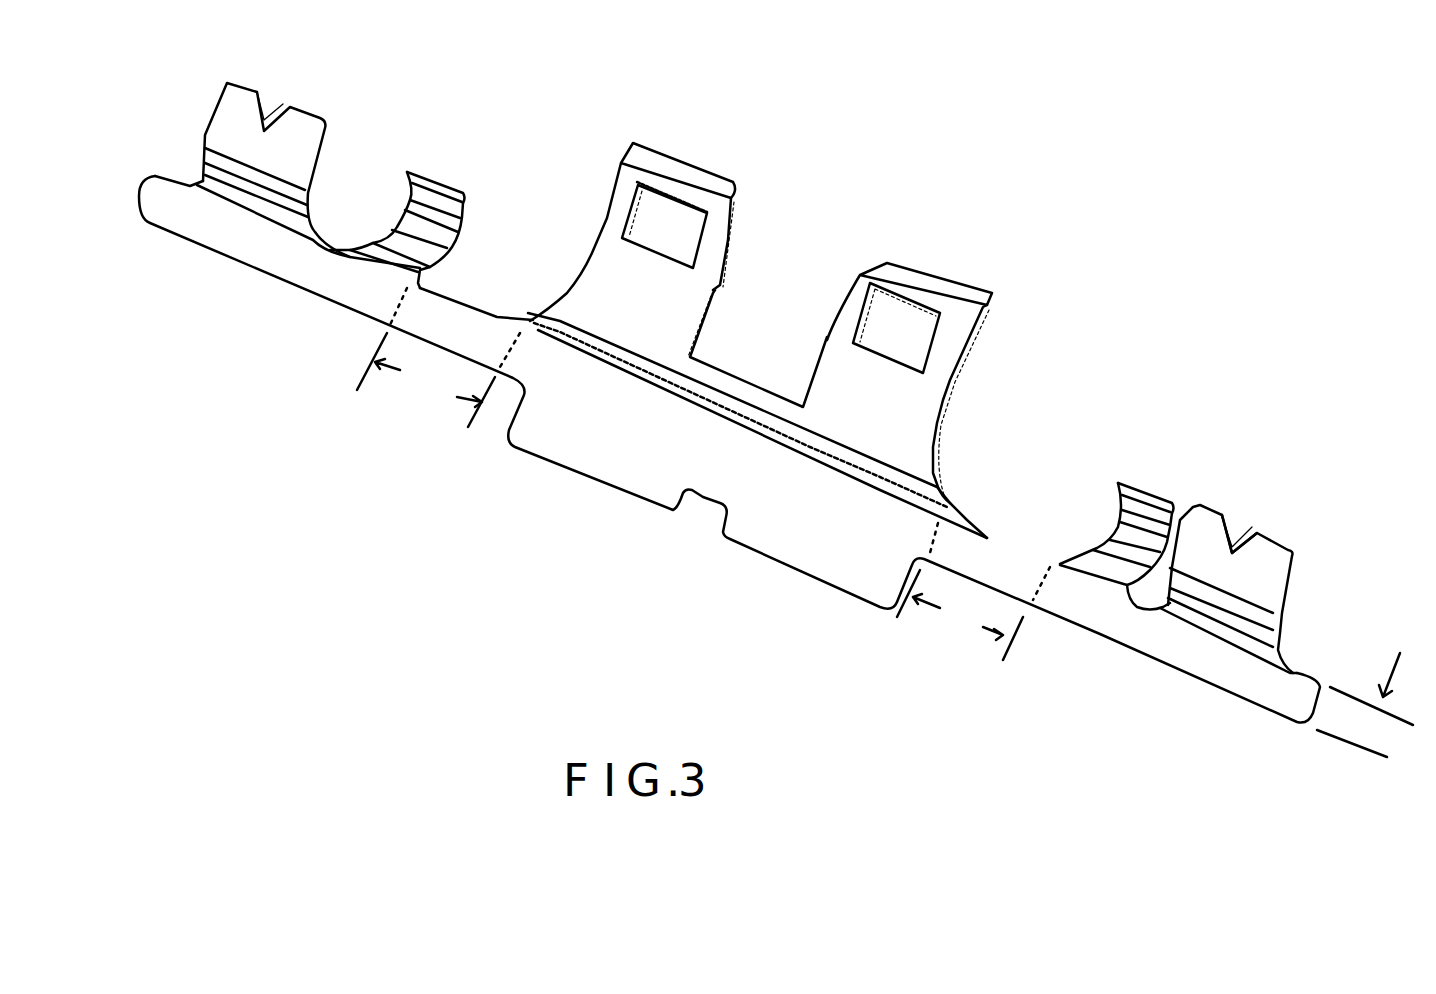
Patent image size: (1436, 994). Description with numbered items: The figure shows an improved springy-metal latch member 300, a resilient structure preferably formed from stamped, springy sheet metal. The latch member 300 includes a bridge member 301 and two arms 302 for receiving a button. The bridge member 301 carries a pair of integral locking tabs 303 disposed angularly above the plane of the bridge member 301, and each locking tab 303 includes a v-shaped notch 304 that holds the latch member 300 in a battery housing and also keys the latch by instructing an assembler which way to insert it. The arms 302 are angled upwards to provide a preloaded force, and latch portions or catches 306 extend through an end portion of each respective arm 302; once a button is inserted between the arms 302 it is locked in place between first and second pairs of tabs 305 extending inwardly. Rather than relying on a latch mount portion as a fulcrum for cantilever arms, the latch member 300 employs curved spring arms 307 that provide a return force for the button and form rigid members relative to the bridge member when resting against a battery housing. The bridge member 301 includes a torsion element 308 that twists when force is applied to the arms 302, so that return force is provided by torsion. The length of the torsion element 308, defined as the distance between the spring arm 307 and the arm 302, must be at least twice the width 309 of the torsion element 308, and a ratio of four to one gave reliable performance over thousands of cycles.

The springy-metal latch member 300 is at (307, 559).
The bridge member 301 is at (717, 467).
The arm 302 is at (913, 253).
The locking tab 303 is at (293, 102).
The v-shaped notch 304 is at (1238, 525).
The tab 305 is at (823, 337).
The catch 306 is at (653, 210).
The curved spring arm 307 is at (440, 178).
The torsion element 308 is at (690, 496).
The width 309 is at (1343, 764).